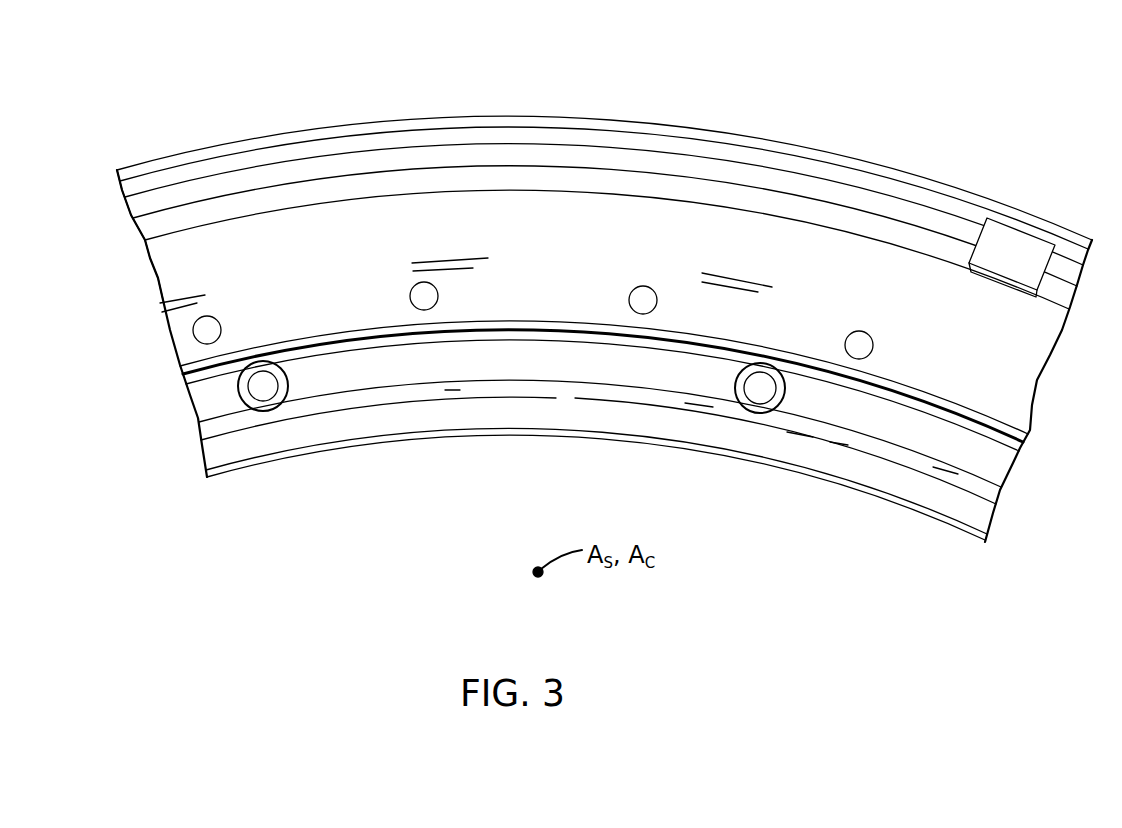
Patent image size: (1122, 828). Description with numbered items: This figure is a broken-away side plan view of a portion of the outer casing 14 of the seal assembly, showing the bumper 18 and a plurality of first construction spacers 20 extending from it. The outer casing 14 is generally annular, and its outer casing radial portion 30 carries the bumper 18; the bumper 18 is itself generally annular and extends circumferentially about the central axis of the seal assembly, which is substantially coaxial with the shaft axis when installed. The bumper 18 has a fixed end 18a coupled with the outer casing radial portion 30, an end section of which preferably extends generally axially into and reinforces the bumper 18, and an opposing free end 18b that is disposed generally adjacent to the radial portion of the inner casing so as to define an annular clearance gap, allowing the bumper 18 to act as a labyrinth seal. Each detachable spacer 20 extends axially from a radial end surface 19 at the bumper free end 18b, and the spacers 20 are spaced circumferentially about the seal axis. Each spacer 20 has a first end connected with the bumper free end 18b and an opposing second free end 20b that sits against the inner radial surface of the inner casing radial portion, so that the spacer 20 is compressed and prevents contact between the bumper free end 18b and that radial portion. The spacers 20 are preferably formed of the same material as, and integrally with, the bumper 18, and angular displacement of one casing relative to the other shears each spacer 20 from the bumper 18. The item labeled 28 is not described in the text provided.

The outer casing 14 is at (604, 295).
The outer flange 28 is at (698, 142).
The outer casing radial portion 30 is at (178, 275).
The bumper 18 is at (604, 343).
The fixed end of bumper 18a is at (757, 343).
The free end of bumper 18b is at (618, 371).
The radial end surface of bumper 19 is at (368, 363).
The detachable spacer 20 is at (491, 434).
The second free end of spacer 20b is at (262, 387).